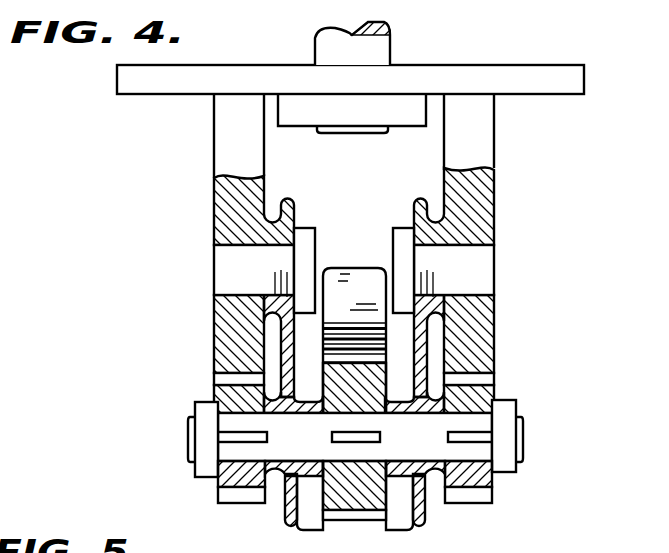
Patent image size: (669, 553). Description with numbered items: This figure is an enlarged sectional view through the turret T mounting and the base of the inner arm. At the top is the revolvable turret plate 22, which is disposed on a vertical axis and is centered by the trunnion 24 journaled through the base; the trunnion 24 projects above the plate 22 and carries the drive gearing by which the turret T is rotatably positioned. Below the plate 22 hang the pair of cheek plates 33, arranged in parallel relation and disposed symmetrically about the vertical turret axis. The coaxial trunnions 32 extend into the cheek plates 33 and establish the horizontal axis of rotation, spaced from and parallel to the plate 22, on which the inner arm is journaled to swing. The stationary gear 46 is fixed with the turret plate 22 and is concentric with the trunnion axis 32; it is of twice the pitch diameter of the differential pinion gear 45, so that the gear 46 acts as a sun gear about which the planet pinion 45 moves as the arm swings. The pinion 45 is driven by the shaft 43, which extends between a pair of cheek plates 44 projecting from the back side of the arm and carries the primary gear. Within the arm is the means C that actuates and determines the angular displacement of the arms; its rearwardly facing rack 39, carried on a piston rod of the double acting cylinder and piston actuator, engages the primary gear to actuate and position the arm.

The turret plate 22 is at (130, 80).
The trunnion 24 is at (373, 47).
The turret T is at (208, 147).
The cheek plates 33 is at (222, 312).
The trunnions 32 is at (225, 265).
The stationary gear 46 is at (233, 377).
The rack 39 is at (354, 340).
The means C is at (364, 262).
The shaft 43 is at (448, 442).
The differential pinion gear 45 is at (228, 494).
The cheek plates 44 is at (283, 524).